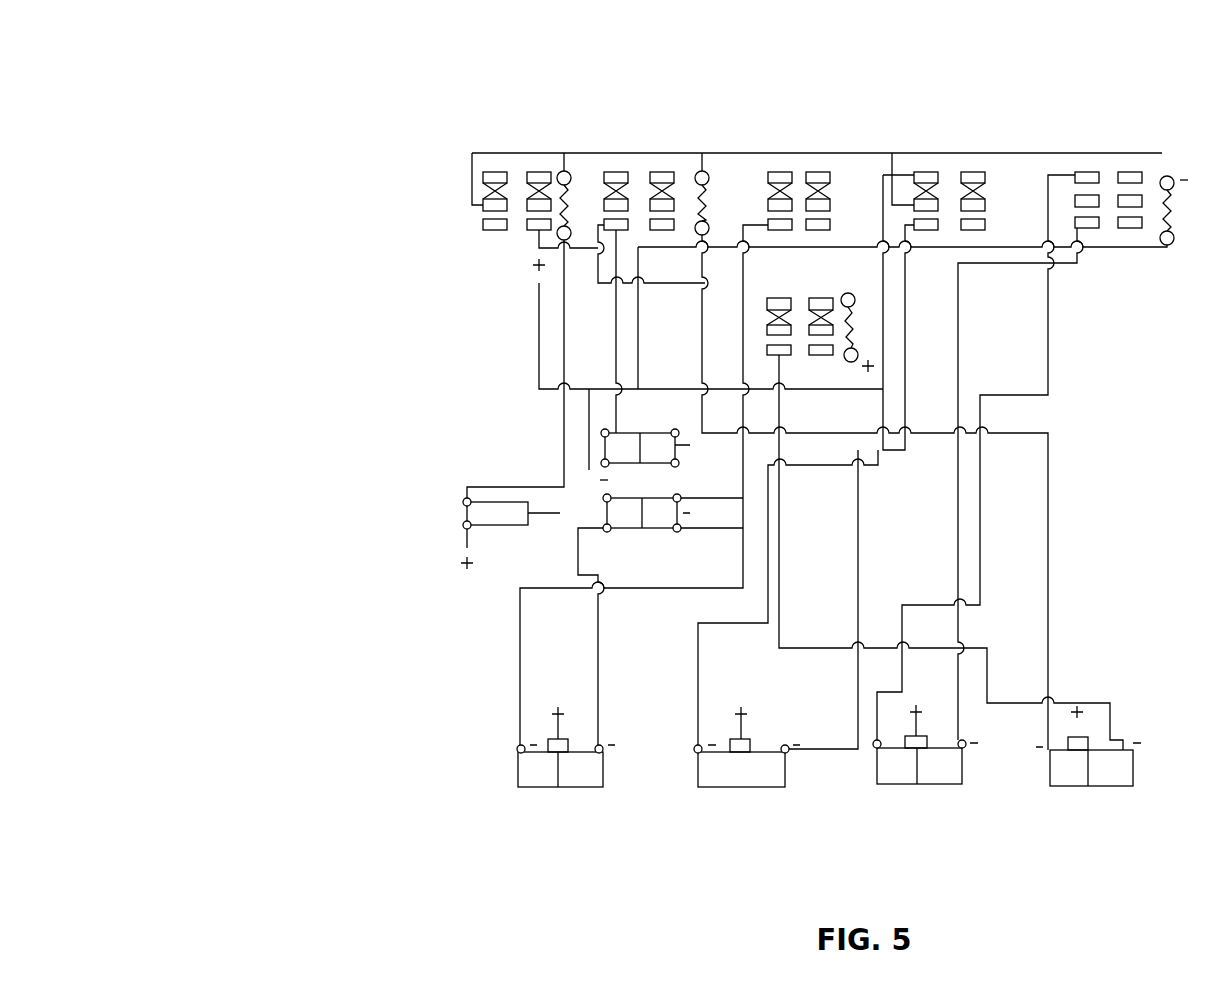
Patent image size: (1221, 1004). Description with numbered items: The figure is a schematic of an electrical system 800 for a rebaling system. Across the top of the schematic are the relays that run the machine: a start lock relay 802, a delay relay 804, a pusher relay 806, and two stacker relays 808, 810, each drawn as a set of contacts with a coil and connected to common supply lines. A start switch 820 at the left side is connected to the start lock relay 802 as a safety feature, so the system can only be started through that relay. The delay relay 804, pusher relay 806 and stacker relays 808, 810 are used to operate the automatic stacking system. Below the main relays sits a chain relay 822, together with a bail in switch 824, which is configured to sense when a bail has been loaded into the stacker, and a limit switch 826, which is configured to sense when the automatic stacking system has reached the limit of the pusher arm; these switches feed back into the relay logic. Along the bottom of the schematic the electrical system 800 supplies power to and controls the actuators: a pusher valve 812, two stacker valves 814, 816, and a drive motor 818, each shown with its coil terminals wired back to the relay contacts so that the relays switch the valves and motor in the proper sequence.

The electrical system 800 is at (222, 60).
The start lock relay 802 is at (502, 78).
The delay relay 804 is at (638, 78).
The pusher relay 806 is at (793, 78).
The stacker relay 808 is at (918, 72).
The stacker relay 810 is at (1100, 72).
The pusher valve 812 is at (560, 855).
The stacker valve 814 is at (742, 855).
The stacker valve 816 is at (926, 855).
The drive motor 818 is at (1095, 855).
The start switch 820 is at (413, 483).
The chain relay 822 is at (775, 297).
The bail in switch 824 is at (677, 494).
The limit switch 826 is at (613, 492).